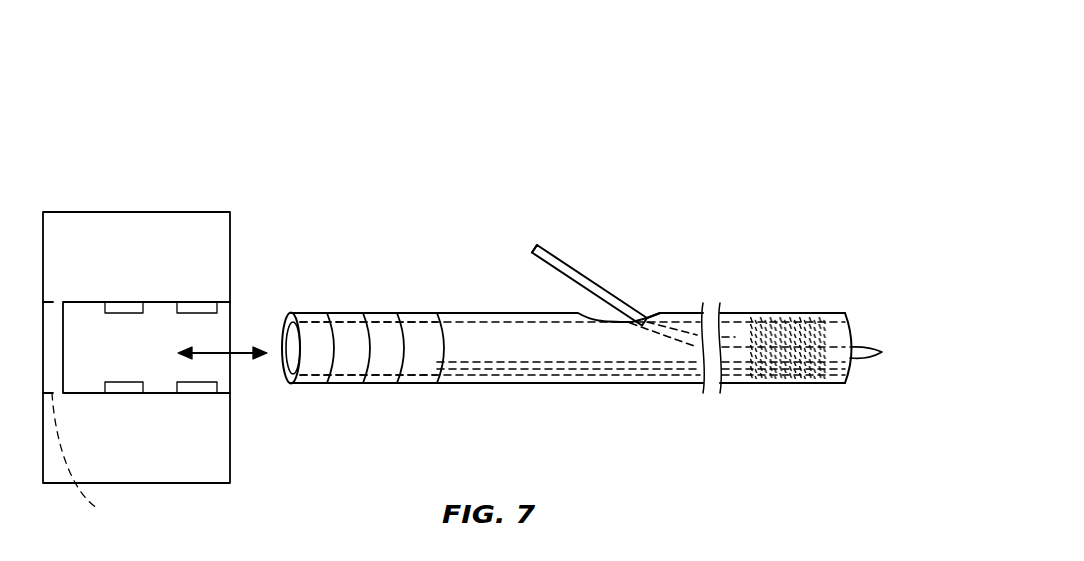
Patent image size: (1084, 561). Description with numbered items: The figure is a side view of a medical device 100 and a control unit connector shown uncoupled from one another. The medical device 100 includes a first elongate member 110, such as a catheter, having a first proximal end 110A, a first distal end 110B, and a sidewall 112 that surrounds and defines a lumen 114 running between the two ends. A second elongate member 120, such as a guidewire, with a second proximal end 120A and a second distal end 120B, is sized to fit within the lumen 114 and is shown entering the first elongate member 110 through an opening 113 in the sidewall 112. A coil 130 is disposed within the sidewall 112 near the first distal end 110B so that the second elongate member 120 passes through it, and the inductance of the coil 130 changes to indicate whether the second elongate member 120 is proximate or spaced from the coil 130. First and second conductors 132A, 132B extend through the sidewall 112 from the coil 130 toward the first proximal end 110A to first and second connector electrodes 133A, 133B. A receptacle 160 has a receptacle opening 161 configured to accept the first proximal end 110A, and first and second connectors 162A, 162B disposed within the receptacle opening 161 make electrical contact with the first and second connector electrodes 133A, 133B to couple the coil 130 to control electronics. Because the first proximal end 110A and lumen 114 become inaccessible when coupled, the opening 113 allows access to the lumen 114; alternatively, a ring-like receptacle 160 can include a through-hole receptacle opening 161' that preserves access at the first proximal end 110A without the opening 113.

The medical device 100 is at (722, 140).
The first elongate member 110 is at (488, 384).
The first proximal end 110A is at (285, 383).
The first distal end 110B is at (855, 330).
The sidewall 112 is at (833, 315).
The opening 113 is at (652, 318).
The lumen 114 is at (290, 337).
The second elongate member 120 is at (572, 268).
The second proximal end 120A is at (533, 245).
The second distal end 120B is at (870, 357).
The coil 130 is at (777, 312).
The first conductor 132A is at (555, 365).
The second conductor 132B is at (385, 374).
The first connector electrode 133A is at (412, 312).
The second connector electrode 133B is at (343, 312).
The receptacle 160 is at (230, 237).
The receptacle opening 161 is at (169, 426).
The receptacle opening 161' is at (103, 458).
The first connector 162A is at (197, 318).
The second connector 162B is at (127, 318).